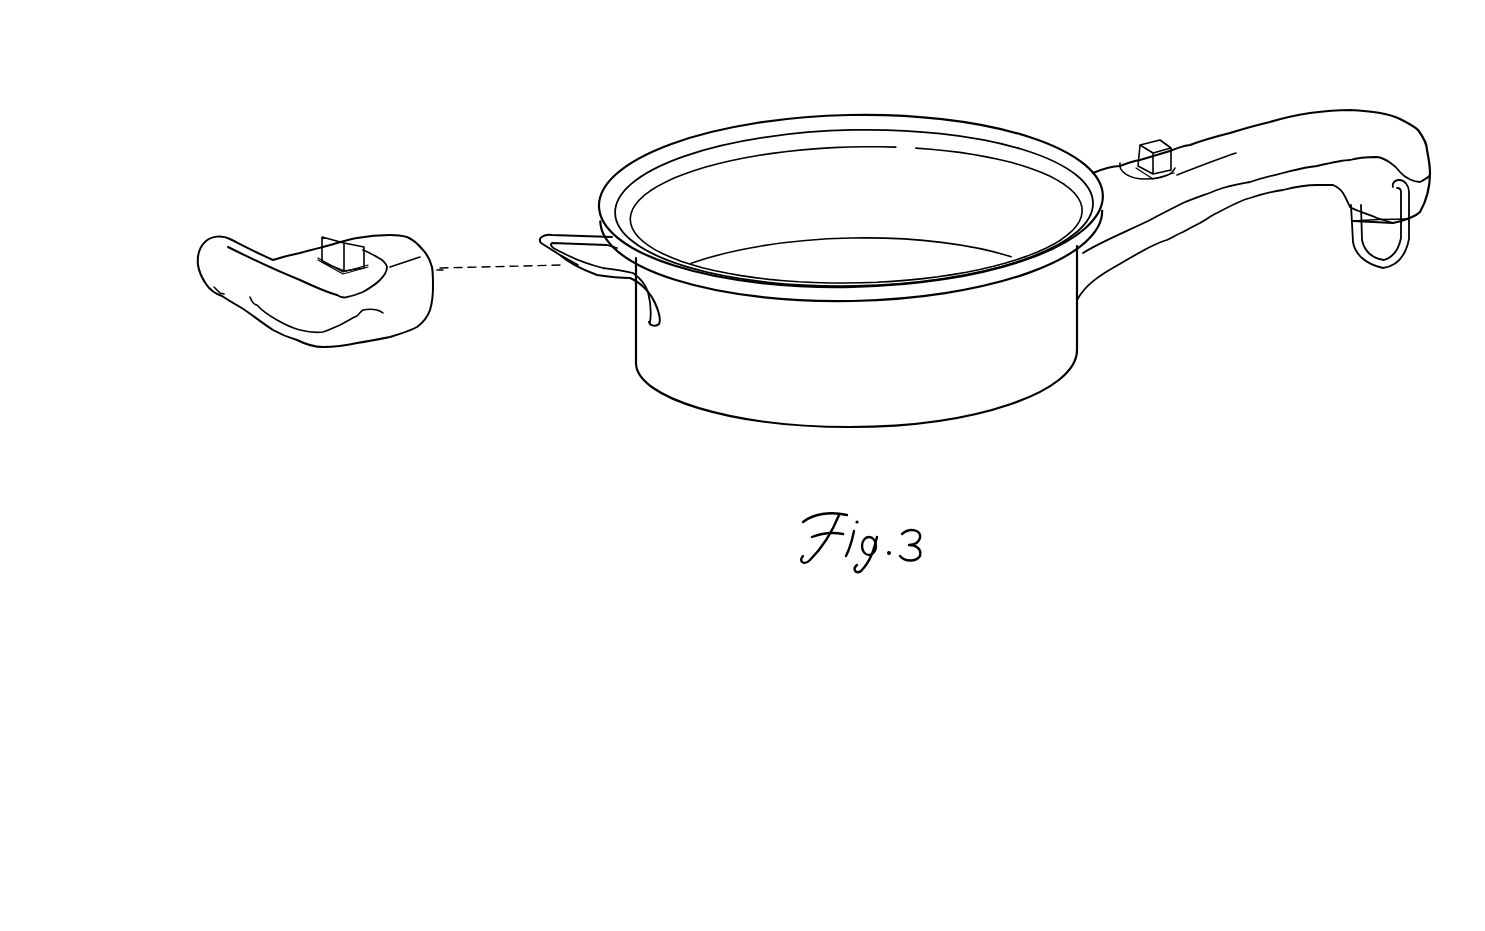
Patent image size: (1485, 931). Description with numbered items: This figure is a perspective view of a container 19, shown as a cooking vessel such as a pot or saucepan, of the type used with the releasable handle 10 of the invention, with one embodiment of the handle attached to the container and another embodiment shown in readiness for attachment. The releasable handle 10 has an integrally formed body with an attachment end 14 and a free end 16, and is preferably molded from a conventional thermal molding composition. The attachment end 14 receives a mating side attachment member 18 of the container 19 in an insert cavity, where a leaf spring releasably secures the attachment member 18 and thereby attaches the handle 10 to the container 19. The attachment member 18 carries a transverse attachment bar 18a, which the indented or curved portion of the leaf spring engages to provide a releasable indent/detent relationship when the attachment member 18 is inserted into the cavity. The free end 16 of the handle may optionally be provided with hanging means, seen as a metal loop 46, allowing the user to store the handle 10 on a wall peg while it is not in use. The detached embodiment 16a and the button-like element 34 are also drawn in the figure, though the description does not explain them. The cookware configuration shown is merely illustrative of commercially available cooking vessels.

The releasable handle 10 is at (985, 237).
The attachment end 14 is at (1163, 228).
The free end 16 is at (1428, 168).
The detachable handle stub 16a is at (289, 239).
The side attachment member 18 is at (578, 237).
The transverse attachment bar 18a is at (567, 263).
The container 19 is at (722, 387).
The release button 34 is at (1163, 155).
The metal loop 46 is at (1407, 240).